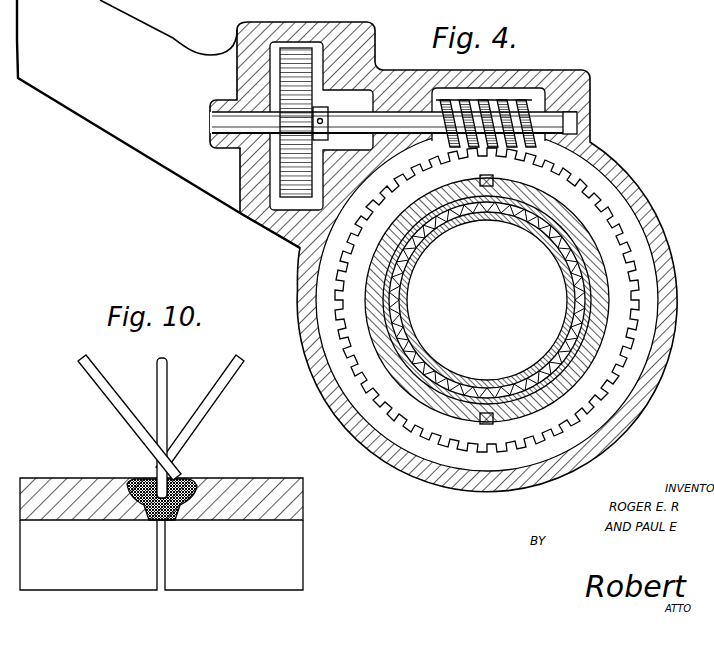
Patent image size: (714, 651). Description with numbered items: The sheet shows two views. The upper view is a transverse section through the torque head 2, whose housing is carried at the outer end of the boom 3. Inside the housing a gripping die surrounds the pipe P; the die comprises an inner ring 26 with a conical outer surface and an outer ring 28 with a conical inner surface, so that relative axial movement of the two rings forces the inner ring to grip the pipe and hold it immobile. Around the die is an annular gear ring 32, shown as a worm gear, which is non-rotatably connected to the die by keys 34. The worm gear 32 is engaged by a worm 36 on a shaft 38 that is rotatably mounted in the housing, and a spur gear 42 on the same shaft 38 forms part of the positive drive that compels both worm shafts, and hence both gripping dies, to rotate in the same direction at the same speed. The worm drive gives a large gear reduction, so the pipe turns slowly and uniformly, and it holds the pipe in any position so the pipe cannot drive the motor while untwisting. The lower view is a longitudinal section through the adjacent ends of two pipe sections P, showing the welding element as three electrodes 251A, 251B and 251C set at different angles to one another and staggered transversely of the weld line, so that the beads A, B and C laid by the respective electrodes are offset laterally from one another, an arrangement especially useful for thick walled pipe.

In FIG. 4, the torque head 2 is at (662, 257).
In FIG. 4, the boom 3 is at (180, 167).
In FIG. 4, the inner ring 26 is at (578, 262).
In FIG. 4, the outer ring 28 is at (577, 372).
In FIG. 4, the gear ring 32 is at (627, 298).
In FIG. 4, the key 34 is at (493, 178).
In FIG. 4, the worm 36 is at (496, 103).
In FIG. 4, the shaft 38 is at (577, 118).
In FIG. 4, the spur gear 42 is at (290, 197).
In FIG. 4, the pipe P is at (408, 313).
In FIG. 10, the pipe P is at (161, 534).
In FIG. 10, the electrode 251A is at (158, 375).
In FIG. 10, the electrode 251B is at (100, 386).
In FIG. 10, the electrode 251C is at (226, 382).
In FIG. 10, the bead A is at (170, 521).
In FIG. 10, the bead B is at (190, 478).
In FIG. 10, the bead C is at (137, 479).